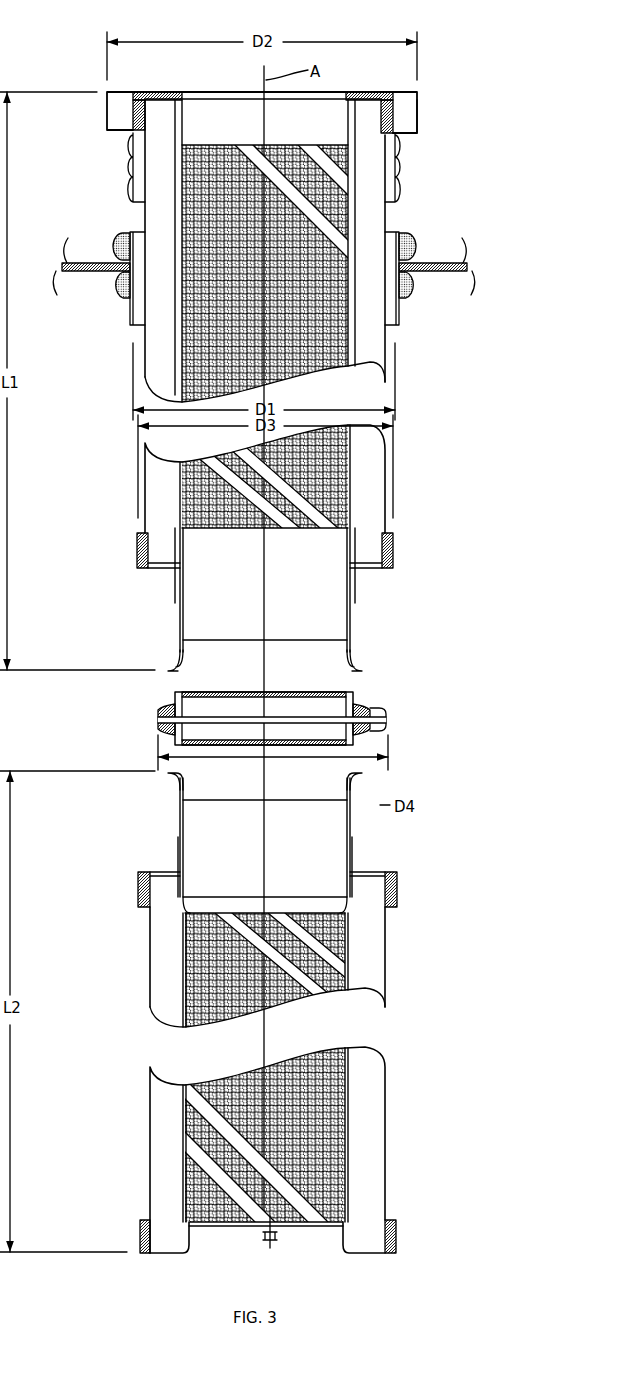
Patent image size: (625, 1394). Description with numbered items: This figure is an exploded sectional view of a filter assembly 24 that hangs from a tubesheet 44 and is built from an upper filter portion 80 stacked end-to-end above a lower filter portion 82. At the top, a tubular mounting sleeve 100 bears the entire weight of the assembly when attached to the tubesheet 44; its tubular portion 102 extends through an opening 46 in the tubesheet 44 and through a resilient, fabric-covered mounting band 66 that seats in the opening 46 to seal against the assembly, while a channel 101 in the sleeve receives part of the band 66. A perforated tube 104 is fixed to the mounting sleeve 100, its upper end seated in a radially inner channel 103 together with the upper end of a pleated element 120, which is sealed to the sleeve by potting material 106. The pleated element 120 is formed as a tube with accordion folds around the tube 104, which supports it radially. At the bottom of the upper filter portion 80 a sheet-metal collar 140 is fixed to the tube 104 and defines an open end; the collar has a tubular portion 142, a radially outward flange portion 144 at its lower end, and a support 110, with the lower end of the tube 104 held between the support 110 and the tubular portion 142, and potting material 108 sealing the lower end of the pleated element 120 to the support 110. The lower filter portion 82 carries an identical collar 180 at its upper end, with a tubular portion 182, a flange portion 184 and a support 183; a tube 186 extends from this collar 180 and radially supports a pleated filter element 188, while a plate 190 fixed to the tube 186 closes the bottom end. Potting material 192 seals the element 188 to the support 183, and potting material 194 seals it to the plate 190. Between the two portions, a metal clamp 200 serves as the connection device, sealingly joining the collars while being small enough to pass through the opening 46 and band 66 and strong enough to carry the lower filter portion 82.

The mounting sleeve 100 is at (417, 100).
The channel 101 is at (394, 135).
The tubular portion 102 is at (395, 190).
The radially inner channel 103 is at (134, 148).
The potting material 106 is at (133, 118).
The upper filter portion 80 is at (138, 213).
The tubesheet 44 is at (442, 242).
The opening 46 is at (398, 300).
The resilient mounting band 66 is at (118, 290).
The pleated element 120 is at (370, 335).
The filter assembly 24 is at (401, 518).
The potting material 108 is at (393, 553).
The support 110 is at (378, 570).
The tube 104 is at (322, 500).
The collar 140 is at (360, 634).
The tubular portion 142 is at (355, 650).
The flange portion 144 is at (362, 668).
The clamp 200 is at (153, 717).
The collar 180 is at (180, 808).
The flange portion 184 is at (357, 777).
The tubular portion 182 is at (350, 800).
The support 183 is at (352, 867).
The potting material 192 is at (396, 885).
The tube 186 is at (385, 945).
The lower filter portion 82 is at (400, 994).
The pleated filter element 188 is at (368, 1080).
The potting material 194 is at (397, 1240).
The plate 190 is at (309, 1224).